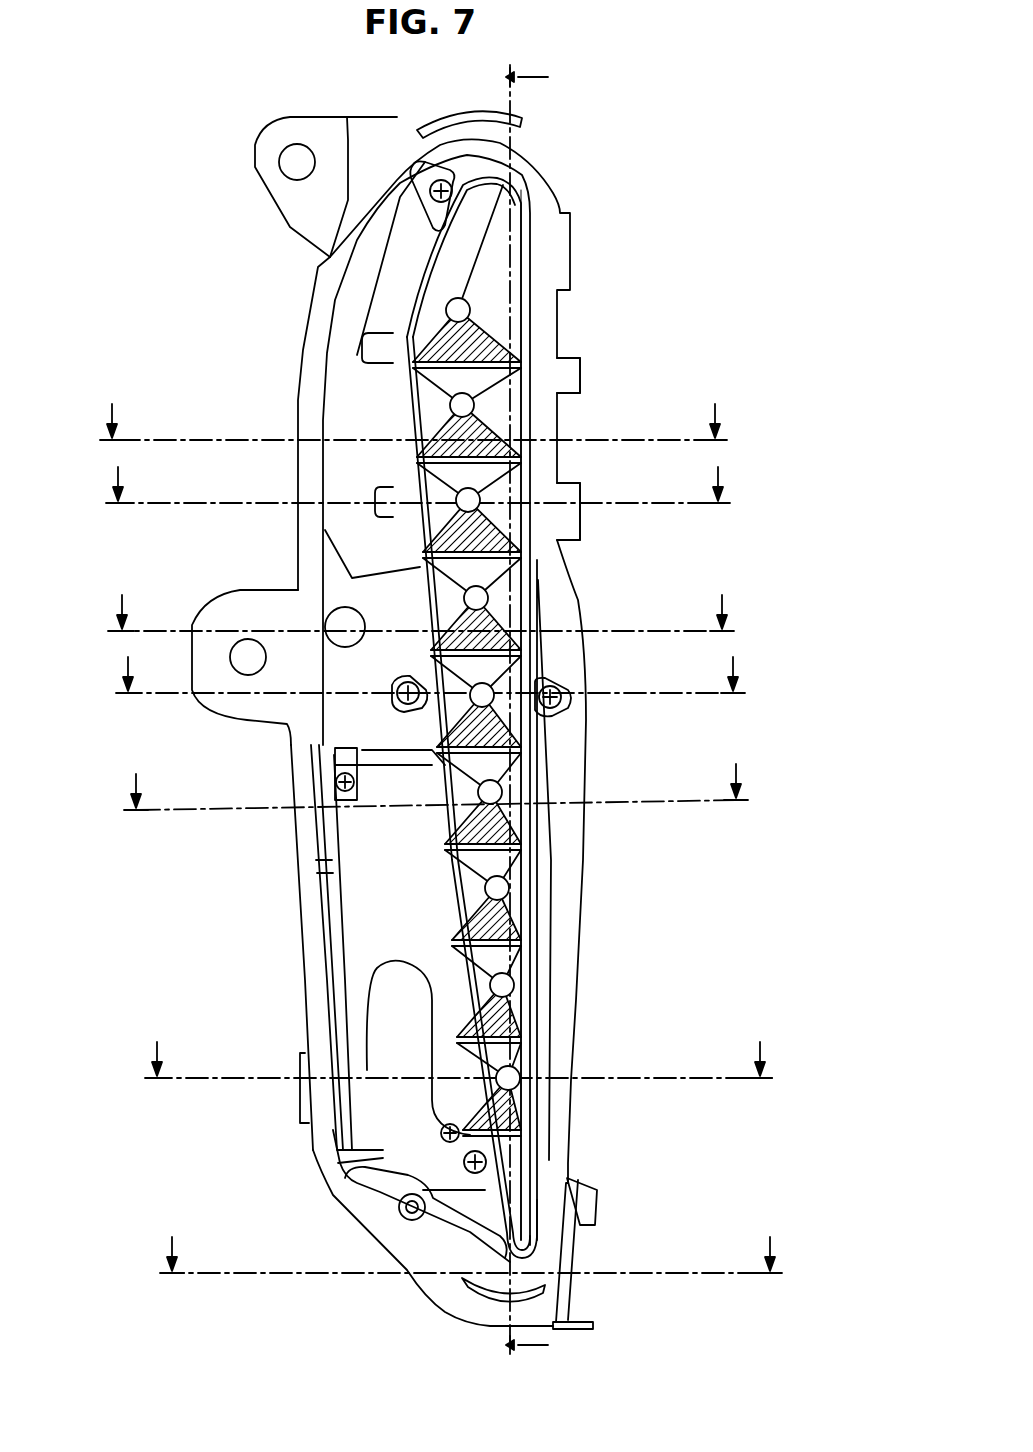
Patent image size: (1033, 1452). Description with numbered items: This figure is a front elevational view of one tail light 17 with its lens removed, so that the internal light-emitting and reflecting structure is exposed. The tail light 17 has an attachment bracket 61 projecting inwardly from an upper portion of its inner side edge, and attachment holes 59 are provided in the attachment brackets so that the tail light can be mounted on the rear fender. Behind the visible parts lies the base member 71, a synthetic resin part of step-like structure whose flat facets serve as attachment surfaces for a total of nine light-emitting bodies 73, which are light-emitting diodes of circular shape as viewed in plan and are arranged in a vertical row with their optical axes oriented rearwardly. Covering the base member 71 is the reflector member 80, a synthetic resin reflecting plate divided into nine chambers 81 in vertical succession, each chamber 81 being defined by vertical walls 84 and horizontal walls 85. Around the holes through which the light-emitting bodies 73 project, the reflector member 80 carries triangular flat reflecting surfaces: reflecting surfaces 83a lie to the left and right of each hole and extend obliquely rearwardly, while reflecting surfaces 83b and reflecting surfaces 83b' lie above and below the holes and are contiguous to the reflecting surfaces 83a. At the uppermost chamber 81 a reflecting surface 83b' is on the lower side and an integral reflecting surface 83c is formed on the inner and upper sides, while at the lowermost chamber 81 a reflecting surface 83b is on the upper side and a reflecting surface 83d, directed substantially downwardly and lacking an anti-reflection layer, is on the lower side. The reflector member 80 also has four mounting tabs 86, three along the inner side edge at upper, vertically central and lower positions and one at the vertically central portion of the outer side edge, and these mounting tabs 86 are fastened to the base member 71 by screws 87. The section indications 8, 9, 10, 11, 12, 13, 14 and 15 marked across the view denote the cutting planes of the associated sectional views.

The section line 8- 8 is at (538, 710).
The section line 9- 9 is at (410, 422).
The section line 10- 10 is at (416, 486).
The section line 11- 11 is at (420, 613).
The section line 12- 12 is at (429, 677).
The section line 13- 13 is at (435, 782).
The section line 14- 14 is at (455, 1061).
The section line 15- 15 is at (467, 1256).
The tail light 17 is at (560, 148).
The attachment holes 59 is at (288, 158).
The attachment bracket 61 is at (306, 117).
The base member 71 is at (374, 224).
The light-emitting bodies 73 is at (446, 310).
The reflector member 80 is at (505, 213).
The chambers 81 is at (565, 228).
The reflecting surfaces 83a is at (310, 428).
The reflecting surfaces 83b is at (451, 712).
The reflecting surfaces 83b' is at (439, 715).
The integral reflecting surface 83c is at (430, 265).
The reflecting surface 83d is at (590, 1185).
The vertical walls 84 is at (305, 398).
The horizontal walls 85 is at (365, 338).
The mounting tabs 86 is at (425, 160).
The screws 87 is at (444, 178).